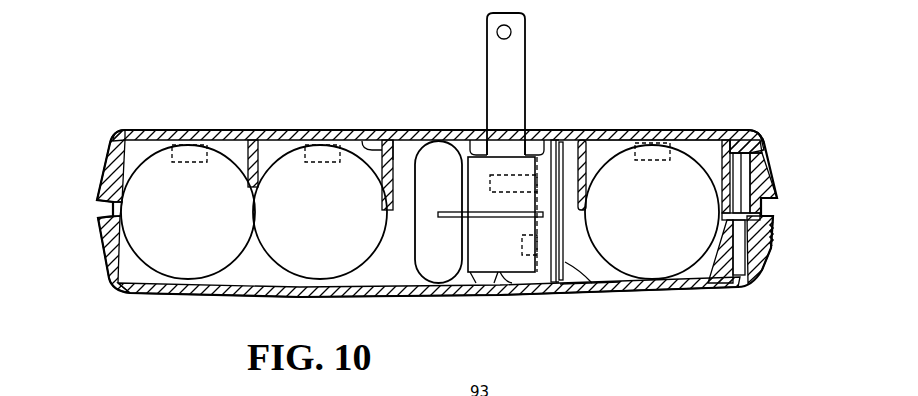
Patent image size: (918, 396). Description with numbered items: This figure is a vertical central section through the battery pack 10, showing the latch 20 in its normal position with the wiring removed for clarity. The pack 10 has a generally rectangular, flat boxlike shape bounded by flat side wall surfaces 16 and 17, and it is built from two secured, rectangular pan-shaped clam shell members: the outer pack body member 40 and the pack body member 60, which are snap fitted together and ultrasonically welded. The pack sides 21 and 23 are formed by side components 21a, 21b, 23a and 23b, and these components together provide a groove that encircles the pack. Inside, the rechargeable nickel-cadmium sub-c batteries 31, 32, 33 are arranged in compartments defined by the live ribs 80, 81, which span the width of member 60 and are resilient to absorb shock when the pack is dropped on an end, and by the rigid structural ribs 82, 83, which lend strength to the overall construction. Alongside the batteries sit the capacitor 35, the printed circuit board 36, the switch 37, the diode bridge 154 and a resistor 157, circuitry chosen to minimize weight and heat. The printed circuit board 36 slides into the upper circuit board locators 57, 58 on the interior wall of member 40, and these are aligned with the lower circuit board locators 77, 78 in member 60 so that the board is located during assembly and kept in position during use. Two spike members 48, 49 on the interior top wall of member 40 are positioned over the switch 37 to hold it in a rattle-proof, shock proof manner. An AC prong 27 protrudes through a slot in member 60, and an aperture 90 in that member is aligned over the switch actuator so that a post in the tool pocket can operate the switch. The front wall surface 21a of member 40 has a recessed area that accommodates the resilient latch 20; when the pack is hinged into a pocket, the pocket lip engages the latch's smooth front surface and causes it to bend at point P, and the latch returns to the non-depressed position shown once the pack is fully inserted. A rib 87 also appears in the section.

The battery pack 10 is at (152, 106).
The side wall surface 16 is at (590, 300).
The side wall surface 17 is at (614, 115).
The latch 20 is at (777, 244).
The pack side 21 is at (788, 198).
The front wall surface 21a is at (728, 287).
The side component 21b is at (752, 128).
The pack side 23 is at (95, 210).
The side component 23a is at (100, 246).
The side component 23b is at (112, 143).
The AC prong 27 is at (520, 43).
The rechargeable nickel-cadmium sub-c battery 31 is at (666, 260).
The rechargeable nickel-cadmium sub-c battery 32 is at (323, 260).
The rechargeable nickel-cadmium sub-c battery 33 is at (198, 260).
The capacitor 35 is at (452, 258).
The printed circuit board 36 is at (590, 290).
The switch 37 is at (483, 160).
The outer pack body member 40 is at (240, 298).
The spike member 48 is at (538, 285).
The spike member 49 is at (478, 285).
The upper circuit board locator 57 is at (568, 268).
The upper circuit board locator 58 is at (528, 272).
The pack body member 60 is at (237, 131).
The lower circuit board locator 77 is at (560, 140).
The lower circuit board locator 78 is at (513, 143).
The live rib 80 is at (603, 138).
The live rib 81 is at (398, 147).
The structural rib 82 is at (259, 142).
The structural rib 83 is at (702, 146).
The partition 87 is at (377, 148).
The aperture 90 is at (497, 128).
The diode bridge 154 is at (523, 242).
The resistor 157 is at (490, 186).
The bend point P is at (776, 146).